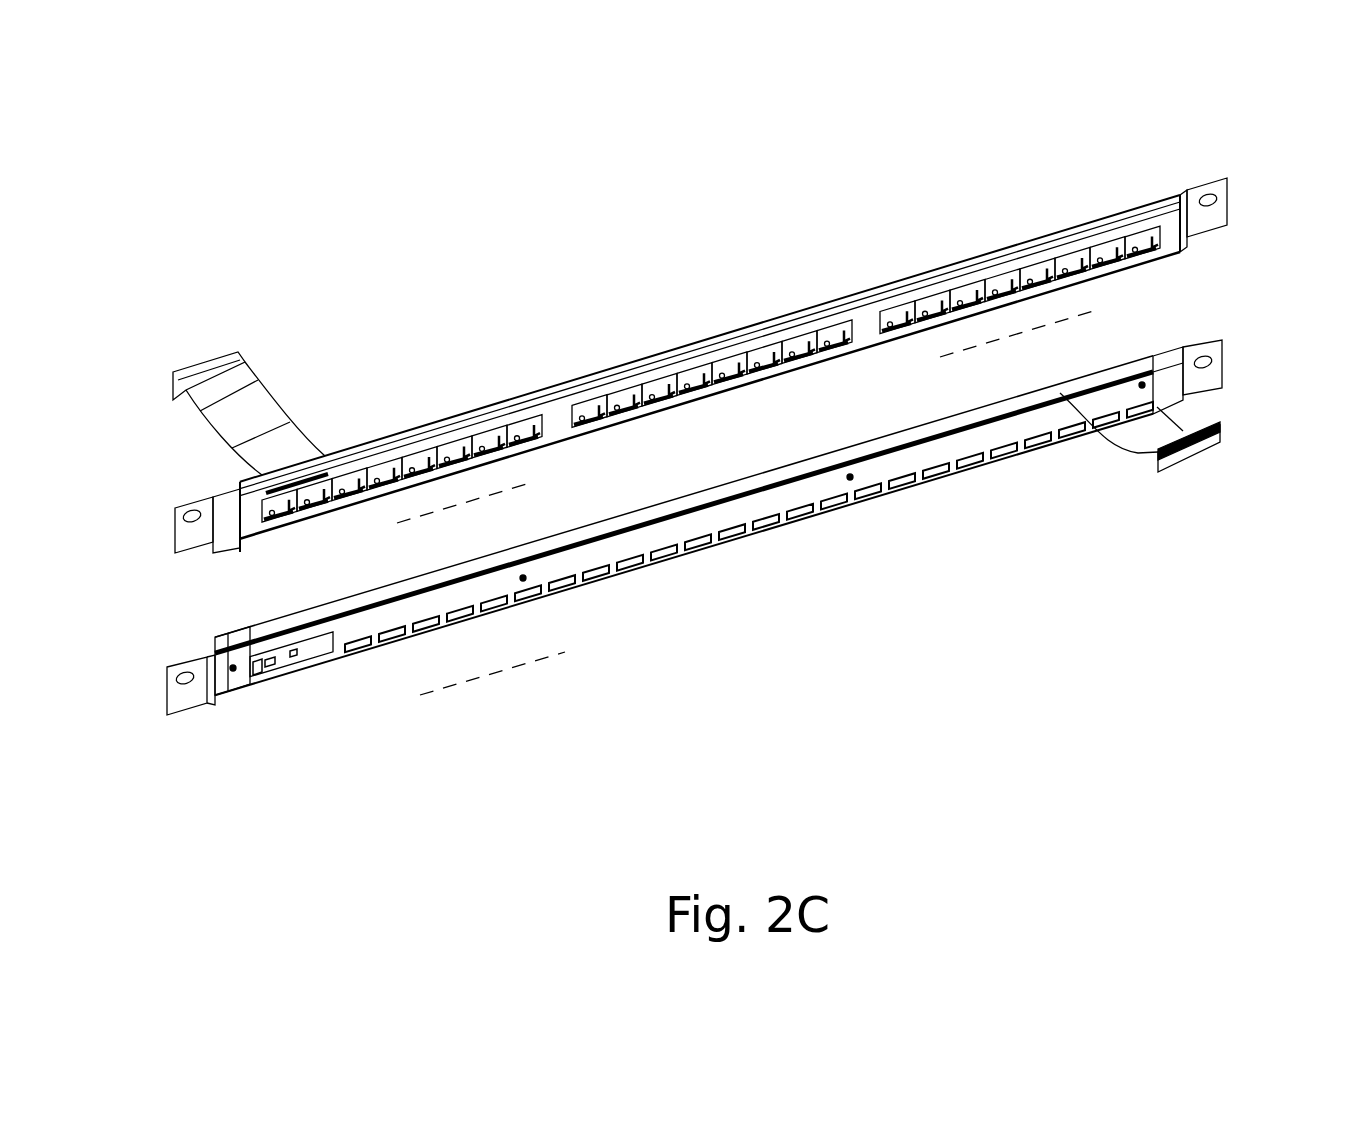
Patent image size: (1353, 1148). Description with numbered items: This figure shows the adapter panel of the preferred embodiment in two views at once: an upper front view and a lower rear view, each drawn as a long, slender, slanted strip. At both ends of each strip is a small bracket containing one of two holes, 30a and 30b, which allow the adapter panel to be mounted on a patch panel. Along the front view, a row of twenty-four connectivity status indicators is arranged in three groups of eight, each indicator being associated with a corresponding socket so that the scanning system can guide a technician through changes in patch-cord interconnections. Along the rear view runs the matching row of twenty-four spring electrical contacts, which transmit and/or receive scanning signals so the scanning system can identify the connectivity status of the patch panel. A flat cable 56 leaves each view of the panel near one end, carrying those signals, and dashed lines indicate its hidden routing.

The hole 30a is at (182, 508).
The hole 30b is at (1216, 190).
The flat cable 56 is at (297, 437).